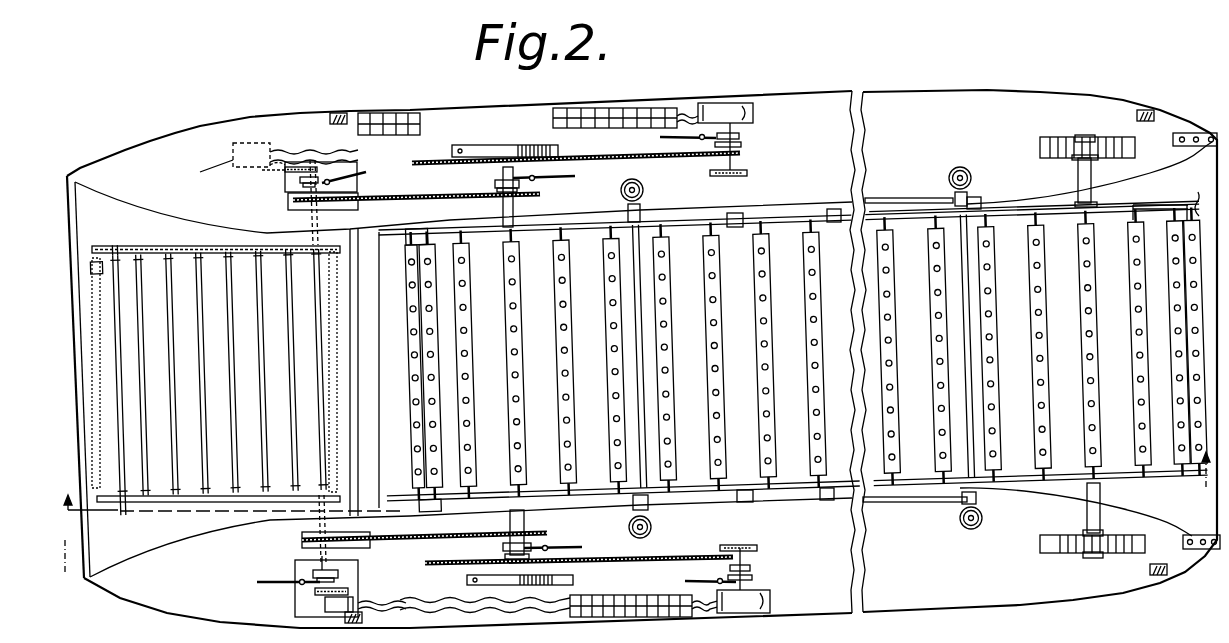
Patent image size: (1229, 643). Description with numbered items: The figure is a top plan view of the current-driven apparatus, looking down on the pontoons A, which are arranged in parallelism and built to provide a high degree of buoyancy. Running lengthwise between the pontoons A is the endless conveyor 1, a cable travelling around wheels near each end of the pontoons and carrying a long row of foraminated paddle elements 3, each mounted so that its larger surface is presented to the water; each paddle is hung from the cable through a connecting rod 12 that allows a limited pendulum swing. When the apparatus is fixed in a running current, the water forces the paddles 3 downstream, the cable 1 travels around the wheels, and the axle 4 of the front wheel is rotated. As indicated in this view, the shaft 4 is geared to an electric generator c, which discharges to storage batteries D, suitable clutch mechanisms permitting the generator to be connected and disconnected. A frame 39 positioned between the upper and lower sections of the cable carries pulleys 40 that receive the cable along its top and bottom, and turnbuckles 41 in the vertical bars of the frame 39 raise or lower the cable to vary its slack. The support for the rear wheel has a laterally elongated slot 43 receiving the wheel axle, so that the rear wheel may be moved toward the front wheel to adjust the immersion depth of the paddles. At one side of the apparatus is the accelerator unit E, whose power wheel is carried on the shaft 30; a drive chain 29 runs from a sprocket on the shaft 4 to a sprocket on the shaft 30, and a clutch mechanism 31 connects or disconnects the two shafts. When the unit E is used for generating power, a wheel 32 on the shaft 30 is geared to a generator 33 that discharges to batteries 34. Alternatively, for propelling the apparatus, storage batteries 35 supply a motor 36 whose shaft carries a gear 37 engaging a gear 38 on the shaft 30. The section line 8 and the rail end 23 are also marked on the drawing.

The endless conveyor 1 is at (906, 218).
The foraminated paddle elements 3 is at (414, 395).
The axle 4 is at (515, 208).
The section line 8 is at (637, 513).
The connecting rod 12 is at (664, 233).
The rail end 23 is at (1160, 205).
The drive chain 29 is at (412, 200).
The shaft 30 is at (305, 234).
The clutch mechanism 31 is at (548, 182).
The wheel 32 is at (322, 162).
The generator 33 is at (271, 169).
The batteries 34 is at (404, 113).
The storage batteries 35 is at (628, 597).
The motor 36 is at (323, 606).
The gear 37 is at (340, 589).
The gear 38 is at (330, 570).
The frame 39 is at (912, 198).
The pulleys 40 is at (730, 216).
The turnbuckles 41 is at (645, 193).
The laterally elongated slot 43 is at (1060, 140).
The pontoons A is at (978, 103).
The storage batteries D is at (662, 108).
The accelerator unit E is at (215, 377).
The motor c is at (755, 108).